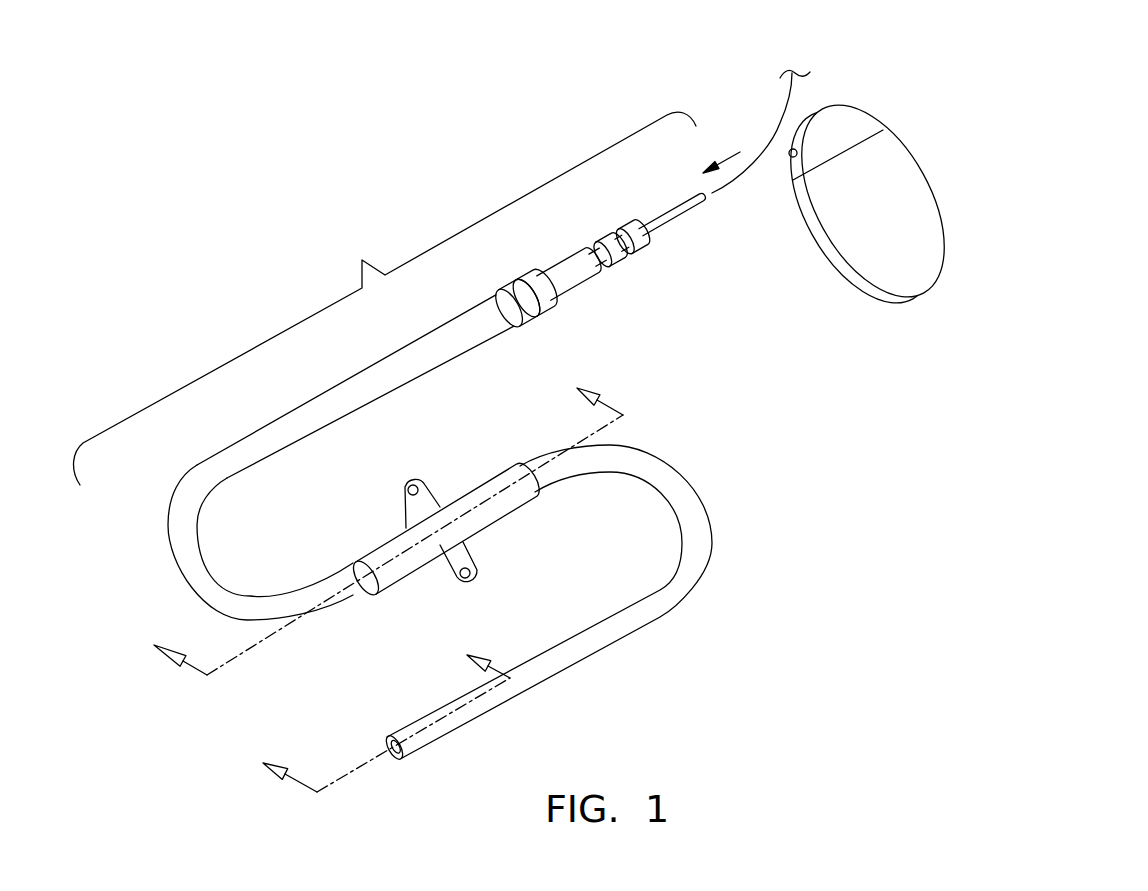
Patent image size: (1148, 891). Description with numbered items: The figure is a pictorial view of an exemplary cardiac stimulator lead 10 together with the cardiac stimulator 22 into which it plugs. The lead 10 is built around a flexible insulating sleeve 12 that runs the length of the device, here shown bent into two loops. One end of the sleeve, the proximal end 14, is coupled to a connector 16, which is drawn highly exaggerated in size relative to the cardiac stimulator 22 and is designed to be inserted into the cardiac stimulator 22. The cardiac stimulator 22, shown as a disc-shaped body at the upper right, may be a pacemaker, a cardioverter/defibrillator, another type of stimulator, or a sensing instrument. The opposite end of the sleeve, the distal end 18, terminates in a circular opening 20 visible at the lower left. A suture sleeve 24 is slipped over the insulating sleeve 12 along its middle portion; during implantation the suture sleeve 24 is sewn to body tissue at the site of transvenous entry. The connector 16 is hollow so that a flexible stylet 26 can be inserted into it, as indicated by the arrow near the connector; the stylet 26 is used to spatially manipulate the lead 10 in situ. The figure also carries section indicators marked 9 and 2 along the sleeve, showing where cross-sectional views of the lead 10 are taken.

The cardiac stimulator lead 10 is at (362, 260).
The flexible insulating sleeve 12 is at (170, 552).
The proximal end 14 is at (350, 410).
The connector 16 is at (505, 331).
The distal end 18 is at (484, 714).
The circular opening 20 is at (389, 759).
The cardiac stimulator 22 is at (930, 294).
The suture sleeve 24 is at (384, 544).
The flexible stylet 26 is at (780, 123).
The section line 9- 9 is at (377, 519).
The section line 2- 2 is at (373, 710).